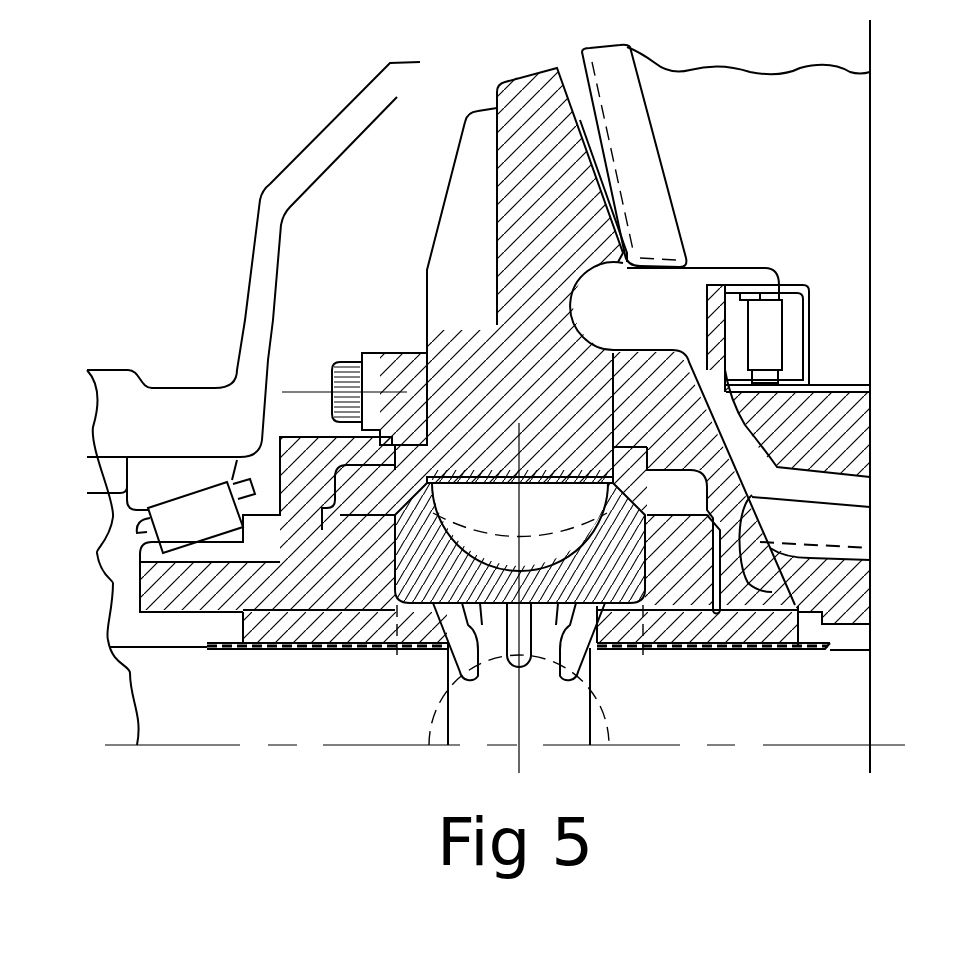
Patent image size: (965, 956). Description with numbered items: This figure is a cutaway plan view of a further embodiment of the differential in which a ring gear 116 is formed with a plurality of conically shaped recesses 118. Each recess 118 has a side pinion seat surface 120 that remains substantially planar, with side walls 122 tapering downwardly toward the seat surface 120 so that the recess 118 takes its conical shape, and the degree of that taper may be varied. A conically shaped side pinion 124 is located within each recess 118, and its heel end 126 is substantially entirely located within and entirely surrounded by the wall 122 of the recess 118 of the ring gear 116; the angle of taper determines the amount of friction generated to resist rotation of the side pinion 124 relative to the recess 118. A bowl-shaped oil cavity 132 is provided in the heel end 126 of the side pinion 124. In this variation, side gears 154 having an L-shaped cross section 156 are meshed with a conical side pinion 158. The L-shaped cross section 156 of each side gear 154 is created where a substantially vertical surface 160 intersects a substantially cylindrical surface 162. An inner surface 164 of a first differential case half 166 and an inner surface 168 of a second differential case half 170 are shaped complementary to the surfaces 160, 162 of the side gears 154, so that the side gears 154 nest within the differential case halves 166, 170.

The ring gear 116 is at (530, 72).
The conically shaped recess 118 is at (495, 480).
The side pinion seat surface 120 is at (481, 484).
The side wall 122 is at (415, 488).
The conically shaped side pinion 124 is at (563, 583).
The heel end 126 is at (545, 447).
The bowl-shaped oil cavity 132 is at (455, 480).
The side gear 154 is at (342, 637).
The L-shaped cross section 156 is at (772, 592).
The conical side pinion 158 is at (636, 502).
The substantially vertical surface 160 is at (752, 495).
The substantially cylindrical surface 162 is at (805, 606).
The inner surface of first differential case half 164 is at (283, 612).
The first differential case half 166 is at (115, 583).
The inner surface of second differential case half 168 is at (712, 605).
The second differential case half 170 is at (853, 582).